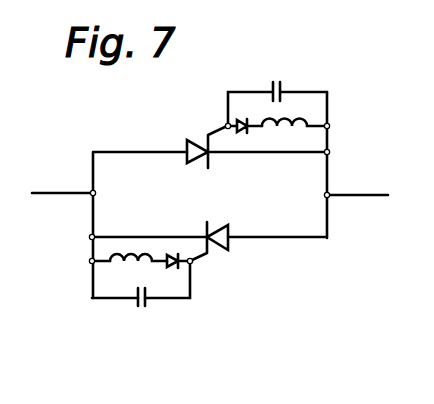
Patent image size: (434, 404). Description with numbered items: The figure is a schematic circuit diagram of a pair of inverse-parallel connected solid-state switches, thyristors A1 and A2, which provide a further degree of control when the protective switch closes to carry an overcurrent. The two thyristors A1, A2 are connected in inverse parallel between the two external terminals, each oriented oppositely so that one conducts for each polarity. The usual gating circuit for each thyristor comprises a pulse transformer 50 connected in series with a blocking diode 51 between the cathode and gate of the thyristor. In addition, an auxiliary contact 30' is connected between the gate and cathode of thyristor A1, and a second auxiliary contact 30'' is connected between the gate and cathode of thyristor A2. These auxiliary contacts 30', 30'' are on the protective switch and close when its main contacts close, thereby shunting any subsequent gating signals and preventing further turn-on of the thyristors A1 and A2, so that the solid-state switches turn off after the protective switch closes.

The thyristor A1 is at (185, 142).
The thyristor A2 is at (229, 229).
The auxiliary contact 30' is at (277, 92).
The auxiliary contact 30'' is at (164, 308).
The blocking diode 51 is at (243, 120).
The pulse transformer 50 is at (294, 122).